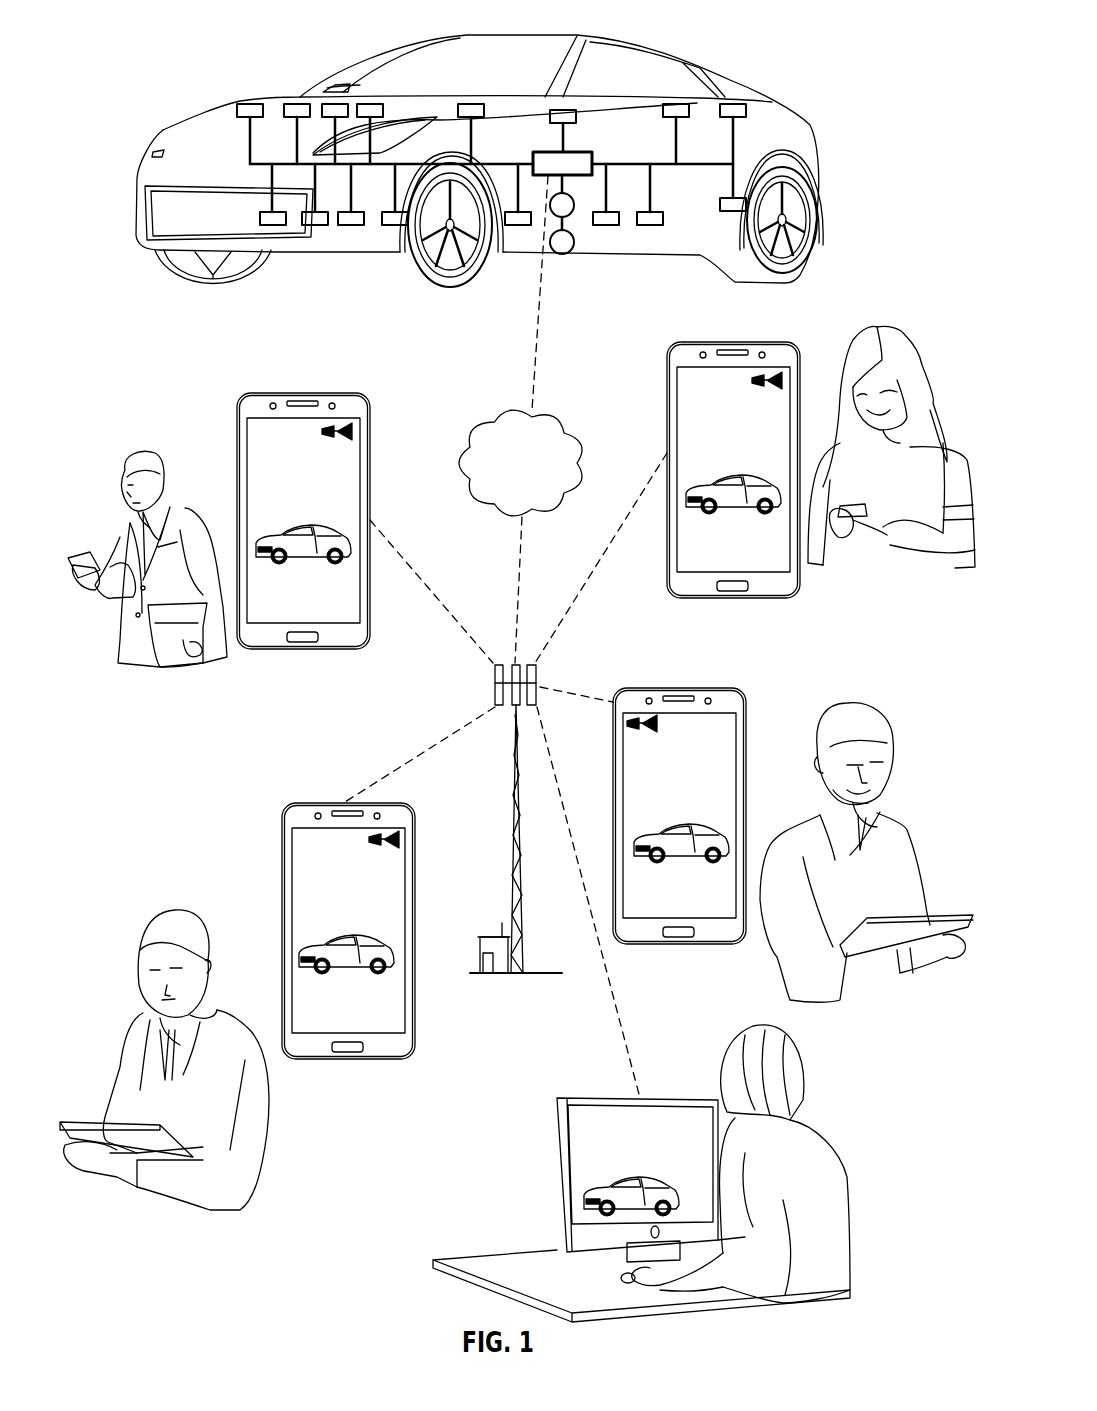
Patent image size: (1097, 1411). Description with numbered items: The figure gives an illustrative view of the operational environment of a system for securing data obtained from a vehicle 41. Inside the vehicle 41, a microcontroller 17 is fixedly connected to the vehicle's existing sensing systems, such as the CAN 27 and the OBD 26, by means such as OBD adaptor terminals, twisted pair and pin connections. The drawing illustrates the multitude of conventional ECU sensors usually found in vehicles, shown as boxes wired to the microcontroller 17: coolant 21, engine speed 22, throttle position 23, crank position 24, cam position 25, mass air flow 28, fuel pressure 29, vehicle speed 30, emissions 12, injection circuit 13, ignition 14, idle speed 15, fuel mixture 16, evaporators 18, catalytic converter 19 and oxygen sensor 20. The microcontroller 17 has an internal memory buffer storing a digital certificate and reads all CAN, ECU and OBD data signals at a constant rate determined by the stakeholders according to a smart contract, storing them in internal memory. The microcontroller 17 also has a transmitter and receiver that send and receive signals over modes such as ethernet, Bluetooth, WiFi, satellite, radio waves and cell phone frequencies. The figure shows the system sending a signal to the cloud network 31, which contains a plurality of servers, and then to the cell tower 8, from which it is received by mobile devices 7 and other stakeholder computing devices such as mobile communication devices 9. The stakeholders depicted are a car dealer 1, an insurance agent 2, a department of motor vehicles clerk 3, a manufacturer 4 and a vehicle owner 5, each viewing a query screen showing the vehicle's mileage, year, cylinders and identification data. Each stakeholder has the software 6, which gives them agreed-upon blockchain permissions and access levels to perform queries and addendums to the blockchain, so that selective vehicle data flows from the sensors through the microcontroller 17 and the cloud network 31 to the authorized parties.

The car dealer 1 is at (117, 468).
The insurance agent 2 is at (125, 1040).
The department of motor vehicles clerk 3 is at (805, 1068).
The manufacturer 4 is at (905, 833).
The vehicle owner 5 is at (838, 398).
The software 6 is at (237, 453).
The mobile devices 7 is at (250, 485).
The cell tower 8 is at (514, 800).
The mobile communication devices 9 is at (557, 1225).
The emissions sensor 12 is at (245, 104).
The injection circuit 13 is at (290, 104).
The ignition sensor 14 is at (329, 104).
The idle speed sensor 15 is at (361, 104).
The fuel mixture sensor 16 is at (462, 104).
The microcontroller 17 is at (540, 152).
The evaporators 18 is at (568, 110).
The catalytic converter sensor 19 is at (680, 104).
The oxygen sensor 20 is at (738, 104).
The coolant sensor 21 is at (277, 225).
The engine speed sensor 22 is at (307, 225).
The throttle position sensor 23 is at (343, 225).
The crank position sensor 24 is at (388, 225).
The cam position sensor 25 is at (523, 225).
The OBD 26 is at (562, 254).
The CAN 27 is at (574, 205).
The mass air flow sensor 28 is at (612, 225).
The fuel pressure sensor 29 is at (657, 225).
The vehicle speed sensor 30 is at (728, 211).
The cloud network 31 is at (545, 482).
The vehicle 41 is at (137, 190).